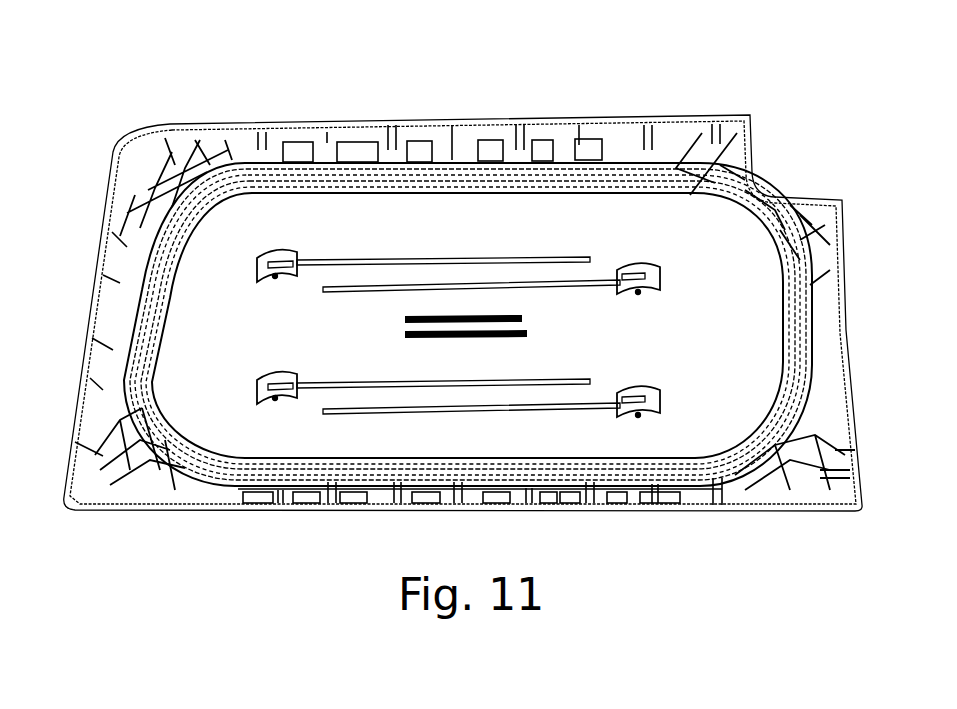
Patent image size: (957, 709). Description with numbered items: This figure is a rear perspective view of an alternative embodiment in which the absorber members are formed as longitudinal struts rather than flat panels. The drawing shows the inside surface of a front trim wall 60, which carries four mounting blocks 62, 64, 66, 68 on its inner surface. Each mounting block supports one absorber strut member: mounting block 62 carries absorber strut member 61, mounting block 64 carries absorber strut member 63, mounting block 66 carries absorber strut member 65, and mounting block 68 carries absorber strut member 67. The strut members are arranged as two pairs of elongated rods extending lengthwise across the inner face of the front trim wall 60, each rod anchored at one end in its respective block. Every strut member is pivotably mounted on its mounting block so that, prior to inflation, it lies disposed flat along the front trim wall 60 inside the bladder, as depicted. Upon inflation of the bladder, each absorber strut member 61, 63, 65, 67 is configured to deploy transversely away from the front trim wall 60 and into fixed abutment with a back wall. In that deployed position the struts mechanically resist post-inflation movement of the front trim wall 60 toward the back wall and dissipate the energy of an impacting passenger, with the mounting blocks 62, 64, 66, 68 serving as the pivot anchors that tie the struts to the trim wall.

The front trim wall 60 is at (252, 110).
The absorber strut member 61 is at (362, 258).
The mounting block 62 is at (262, 255).
The absorber strut member 63 is at (368, 292).
The mounting block 64 is at (645, 267).
The absorber strut member 65 is at (545, 380).
The mounting block 66 is at (262, 378).
The absorber strut member 67 is at (410, 410).
The mounting block 68 is at (650, 390).